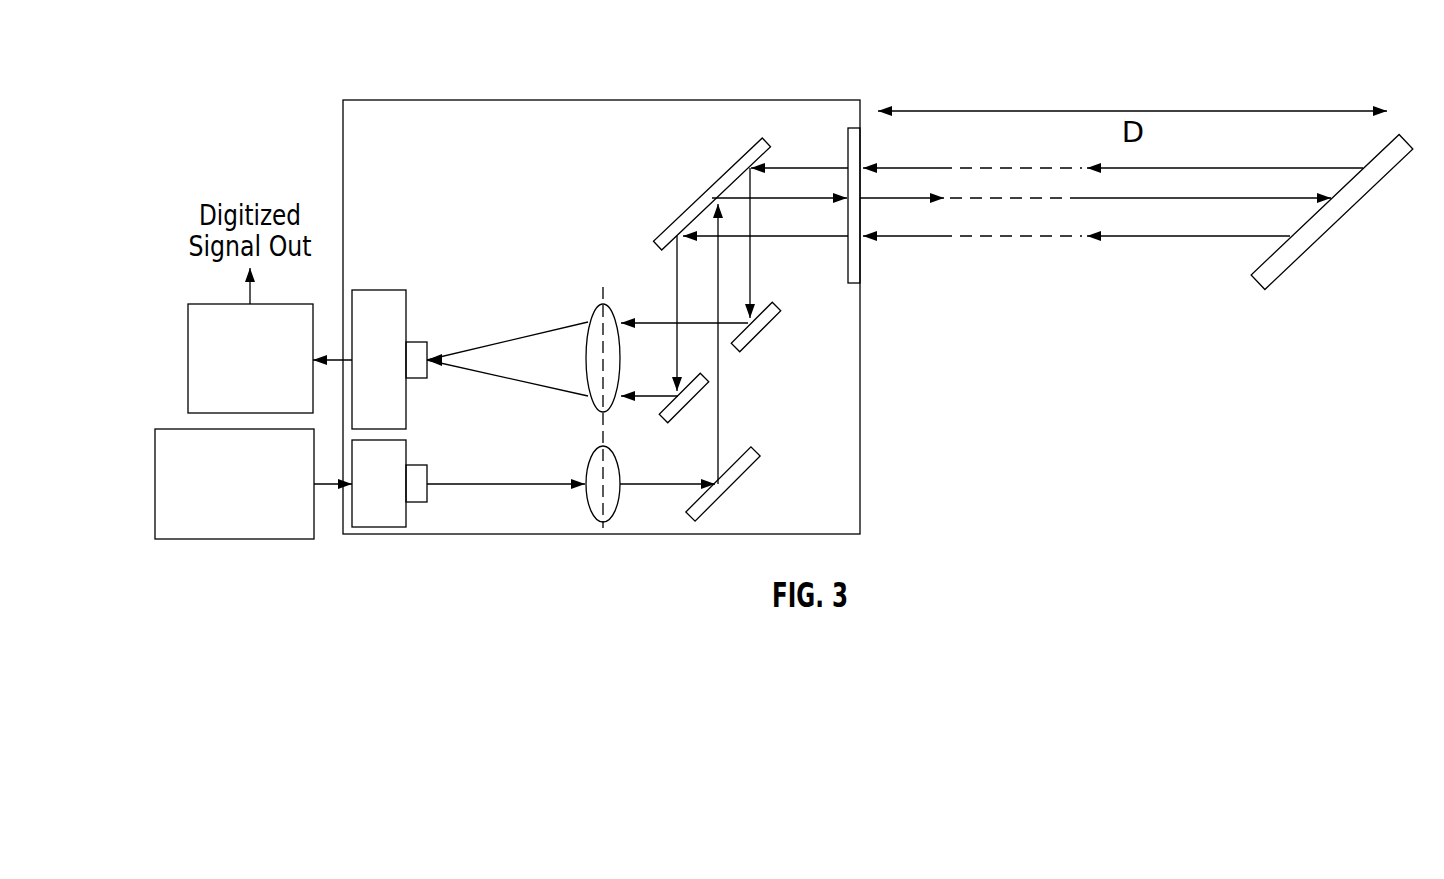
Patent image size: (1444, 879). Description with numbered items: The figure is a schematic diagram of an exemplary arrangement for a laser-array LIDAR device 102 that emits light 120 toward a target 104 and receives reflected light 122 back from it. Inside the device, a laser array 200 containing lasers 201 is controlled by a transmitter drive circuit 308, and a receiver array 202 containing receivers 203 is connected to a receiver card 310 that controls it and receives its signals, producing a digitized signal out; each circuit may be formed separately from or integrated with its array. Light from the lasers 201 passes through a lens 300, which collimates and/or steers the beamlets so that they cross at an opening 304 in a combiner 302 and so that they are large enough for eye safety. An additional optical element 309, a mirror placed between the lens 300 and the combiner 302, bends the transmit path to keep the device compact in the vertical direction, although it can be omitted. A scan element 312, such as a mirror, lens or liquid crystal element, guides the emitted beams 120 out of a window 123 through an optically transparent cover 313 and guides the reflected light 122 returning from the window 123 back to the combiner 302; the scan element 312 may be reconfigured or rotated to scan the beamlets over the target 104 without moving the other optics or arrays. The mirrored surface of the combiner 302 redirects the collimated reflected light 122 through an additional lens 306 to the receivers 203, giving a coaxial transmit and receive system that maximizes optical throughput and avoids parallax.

The laser-array LIDAR device 102 is at (356, 140).
The target 104 is at (1292, 249).
The emitted light 120 is at (1169, 218).
The reflected light 122 is at (906, 248).
The window 123 is at (871, 155).
The laser array 200 is at (417, 424).
The laser 201 is at (418, 465).
The receiver array 202 is at (419, 334).
The receivers 203 is at (418, 379).
The lens 300 is at (585, 501).
The combiner 302 is at (765, 342).
The opening 304 is at (723, 375).
The additional lens 306 is at (590, 406).
The transmitter drive circuit 308 is at (213, 530).
The additional optical element 309 is at (735, 491).
The receiver card 310 is at (229, 405).
The scan element 312 is at (688, 188).
The optically transparent cover 313 is at (848, 128).